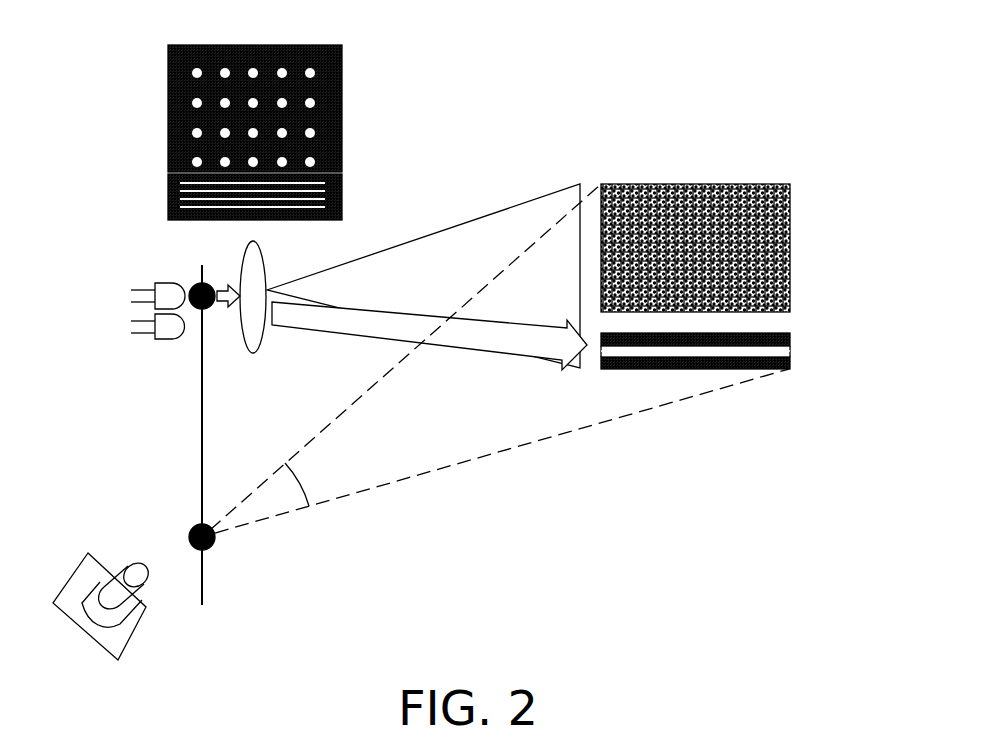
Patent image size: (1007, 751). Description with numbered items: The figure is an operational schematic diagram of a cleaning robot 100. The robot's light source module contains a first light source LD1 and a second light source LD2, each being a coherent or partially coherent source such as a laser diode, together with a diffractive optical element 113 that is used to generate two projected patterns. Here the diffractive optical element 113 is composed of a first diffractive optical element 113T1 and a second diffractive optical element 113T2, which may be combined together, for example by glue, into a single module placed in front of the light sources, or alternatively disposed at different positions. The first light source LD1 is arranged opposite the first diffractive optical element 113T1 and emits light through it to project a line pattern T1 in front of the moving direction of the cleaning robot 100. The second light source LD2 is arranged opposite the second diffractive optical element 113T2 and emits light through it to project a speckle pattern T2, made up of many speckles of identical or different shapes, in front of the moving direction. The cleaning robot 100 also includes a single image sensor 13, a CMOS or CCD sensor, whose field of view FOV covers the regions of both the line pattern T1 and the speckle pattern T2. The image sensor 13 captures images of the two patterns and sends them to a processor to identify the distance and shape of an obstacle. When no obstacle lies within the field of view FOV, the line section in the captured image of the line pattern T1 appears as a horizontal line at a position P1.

The cleaning robot 100 is at (98, 38).
The second diffractive optical element 113T2 is at (168, 109).
The first diffractive optical element 113T1 is at (168, 188).
The diffractive optical element 113 is at (247, 251).
The second light source LD2 is at (156, 279).
The first light source LD1 is at (155, 343).
The speckle pattern T2 is at (838, 248).
The line pattern T1 is at (838, 323).
The position P1 is at (795, 352).
The field of view FOV is at (499, 359).
The image sensor 13 is at (128, 645).